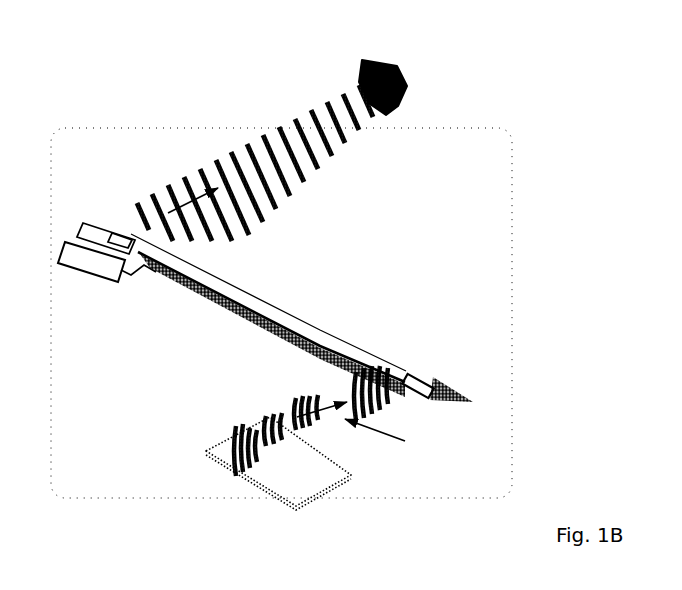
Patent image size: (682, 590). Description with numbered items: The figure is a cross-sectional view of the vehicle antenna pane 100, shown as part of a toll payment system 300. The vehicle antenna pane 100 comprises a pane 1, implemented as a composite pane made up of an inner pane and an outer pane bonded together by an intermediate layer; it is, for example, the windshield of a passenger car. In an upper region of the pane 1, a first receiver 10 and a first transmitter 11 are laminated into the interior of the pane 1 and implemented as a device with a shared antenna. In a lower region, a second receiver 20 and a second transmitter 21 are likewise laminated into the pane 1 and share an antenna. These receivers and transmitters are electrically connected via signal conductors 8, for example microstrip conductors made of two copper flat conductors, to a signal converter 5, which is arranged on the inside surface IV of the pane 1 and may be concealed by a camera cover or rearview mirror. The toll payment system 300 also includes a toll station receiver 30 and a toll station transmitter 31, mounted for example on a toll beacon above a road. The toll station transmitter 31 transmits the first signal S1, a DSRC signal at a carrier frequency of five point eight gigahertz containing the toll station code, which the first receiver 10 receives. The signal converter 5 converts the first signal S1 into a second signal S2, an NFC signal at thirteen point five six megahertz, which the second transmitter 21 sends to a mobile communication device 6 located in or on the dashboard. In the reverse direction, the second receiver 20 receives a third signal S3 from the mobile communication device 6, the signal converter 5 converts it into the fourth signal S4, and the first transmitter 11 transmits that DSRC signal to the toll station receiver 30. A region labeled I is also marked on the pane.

The toll payment system 300 is at (85, 88).
The vehicle antenna pane 100 is at (443, 262).
The pane 1 is at (372, 347).
The signal converter 5 is at (107, 262).
The mobile communication device 6 is at (290, 464).
The signal conductors 8 is at (80, 233).
The first receiver 10 is at (80, 196).
The first transmitter 11 is at (115, 236).
The second receiver 20 is at (466, 363).
The second transmitter 21 is at (427, 377).
The toll station receiver 30 is at (449, 84).
The toll station transmitter 31 is at (398, 80).
The first signal S1 is at (272, 150).
The second signal S2 is at (389, 413).
The third signal S3 is at (313, 412).
The fourth signal S4 is at (186, 204).
The region I is at (284, 298).
The inside surface IV is at (240, 317).